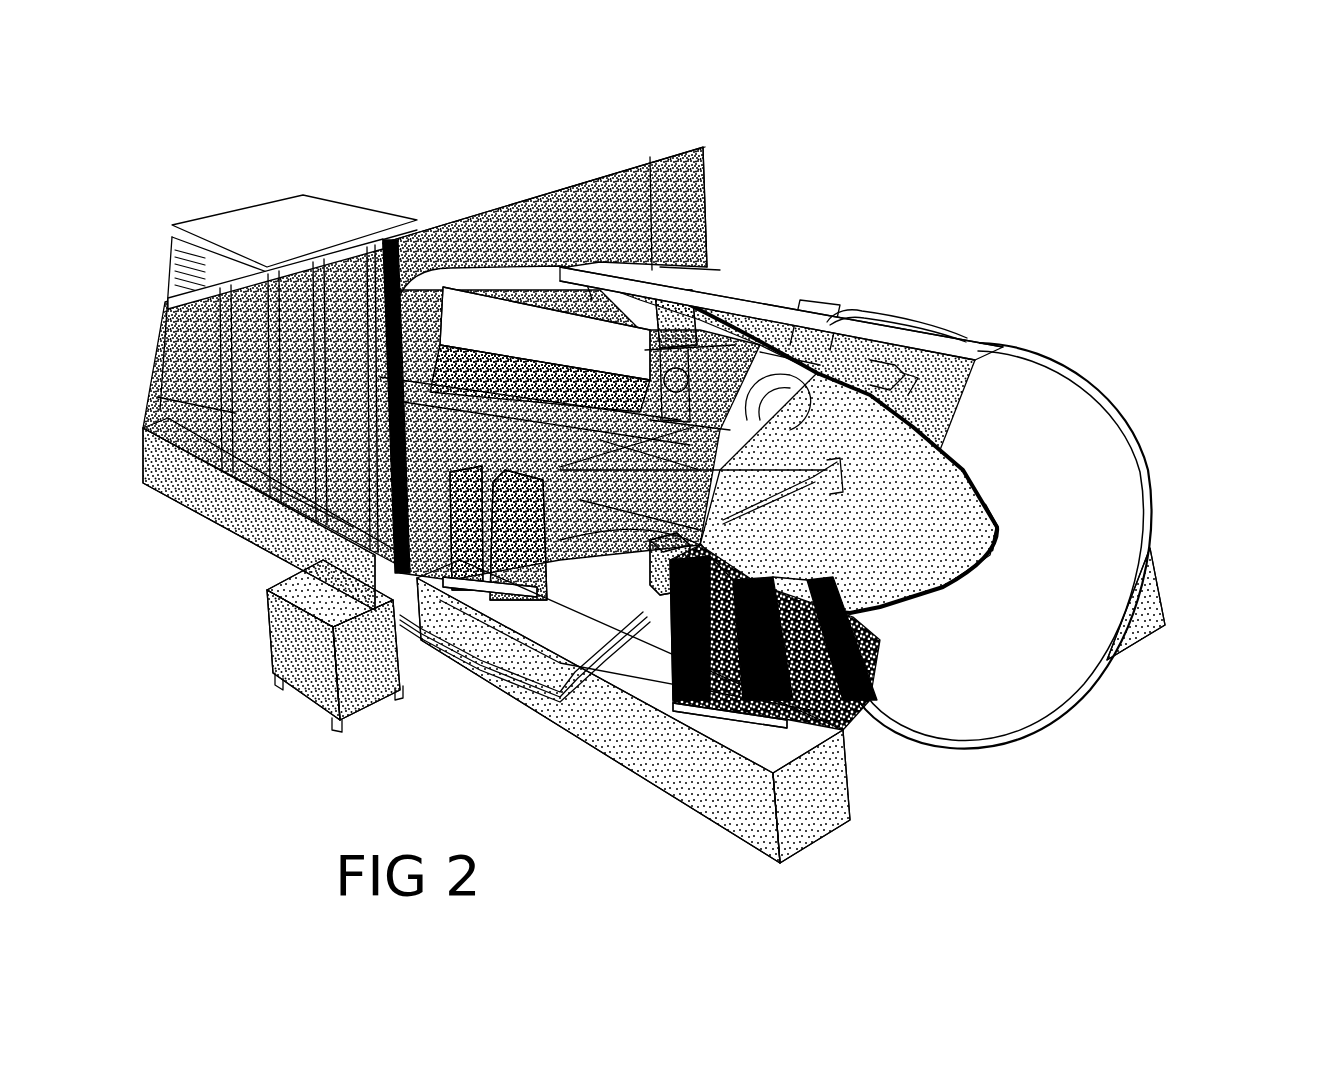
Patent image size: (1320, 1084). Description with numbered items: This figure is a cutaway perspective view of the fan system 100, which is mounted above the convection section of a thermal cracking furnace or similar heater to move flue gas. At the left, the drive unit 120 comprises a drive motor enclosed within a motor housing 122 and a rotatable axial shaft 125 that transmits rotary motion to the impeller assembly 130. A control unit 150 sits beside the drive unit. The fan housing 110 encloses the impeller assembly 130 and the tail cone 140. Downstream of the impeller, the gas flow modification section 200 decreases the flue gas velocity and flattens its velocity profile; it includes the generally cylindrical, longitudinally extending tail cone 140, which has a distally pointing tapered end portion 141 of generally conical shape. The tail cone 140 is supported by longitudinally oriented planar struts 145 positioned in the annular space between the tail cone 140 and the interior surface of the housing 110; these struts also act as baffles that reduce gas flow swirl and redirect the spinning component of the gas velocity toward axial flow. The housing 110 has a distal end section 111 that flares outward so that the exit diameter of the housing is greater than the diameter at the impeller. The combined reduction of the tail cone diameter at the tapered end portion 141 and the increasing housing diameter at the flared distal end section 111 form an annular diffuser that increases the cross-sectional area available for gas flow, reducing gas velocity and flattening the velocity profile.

The fan system 100 is at (925, 188).
The fan housing 110 is at (878, 310).
The distal end section 111 is at (1023, 323).
The drive unit 120 is at (407, 197).
The motor housing 122 is at (300, 128).
The rotatable axial shaft 125 is at (513, 346).
The impeller assembly 130 is at (710, 325).
The tail cone 140 is at (962, 467).
The tapered end portion 141 is at (993, 533).
The planar struts 145 is at (794, 342).
The control unit 150 is at (262, 636).
The gas flow modification section 200 is at (1113, 339).